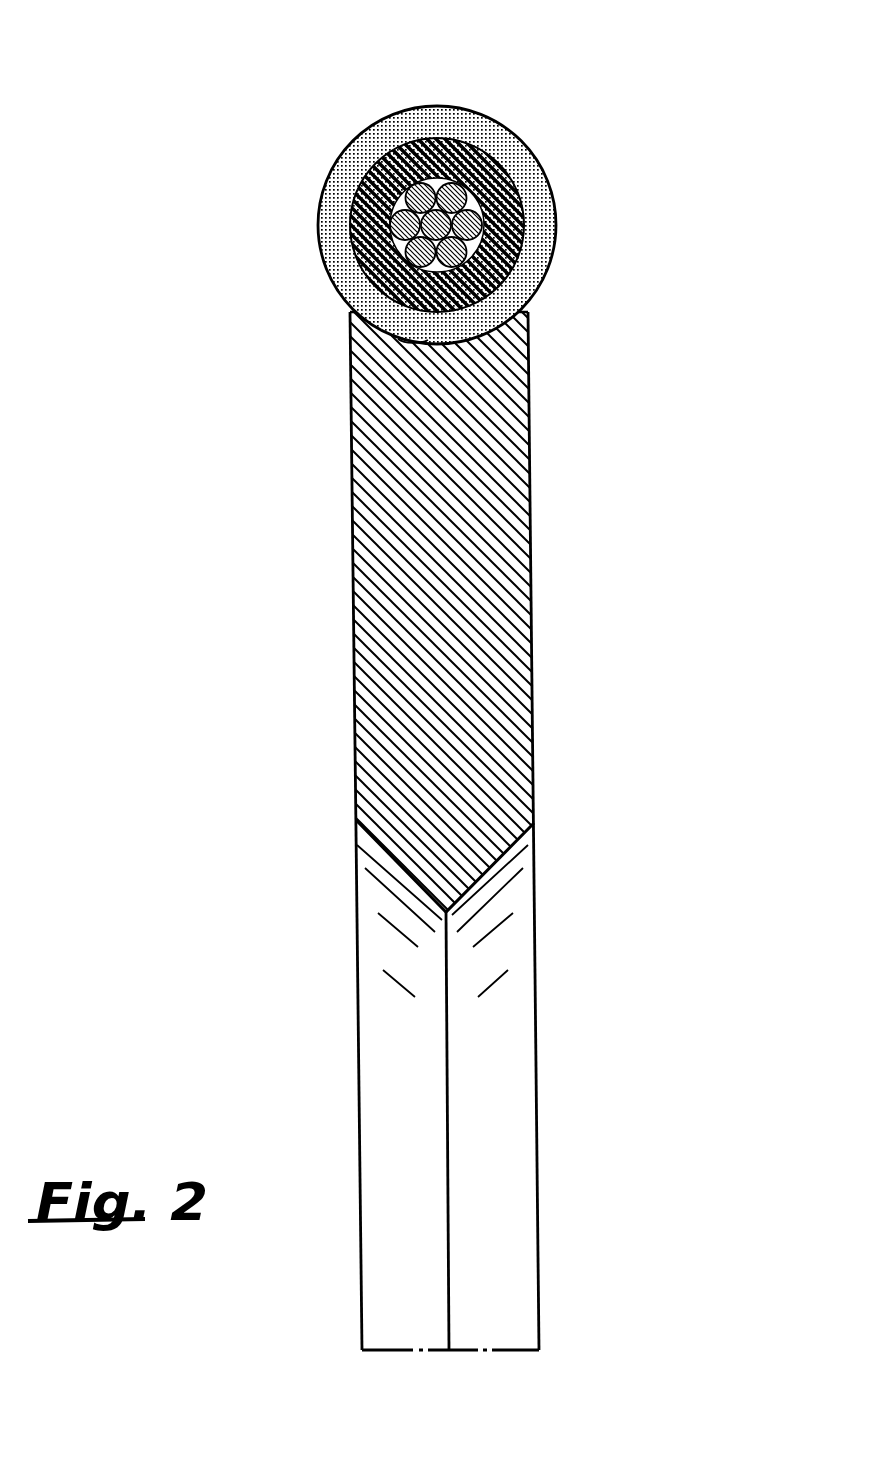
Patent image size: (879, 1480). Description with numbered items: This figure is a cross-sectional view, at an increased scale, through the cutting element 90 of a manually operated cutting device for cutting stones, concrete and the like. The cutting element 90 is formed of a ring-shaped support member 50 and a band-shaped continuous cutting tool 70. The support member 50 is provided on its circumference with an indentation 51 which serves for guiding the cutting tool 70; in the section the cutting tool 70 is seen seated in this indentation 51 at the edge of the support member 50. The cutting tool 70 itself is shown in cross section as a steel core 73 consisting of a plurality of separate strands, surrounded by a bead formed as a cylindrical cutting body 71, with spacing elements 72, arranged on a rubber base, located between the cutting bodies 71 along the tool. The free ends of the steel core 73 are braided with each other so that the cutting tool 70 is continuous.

The cutting element 90 is at (405, 675).
The cutting tool 70 is at (405, 185).
The cutting bodies 71 is at (332, 193).
The spacing elements 72 is at (362, 238).
The steel core 73 is at (457, 183).
The support member 50 is at (375, 488).
The indentation 51 is at (428, 340).